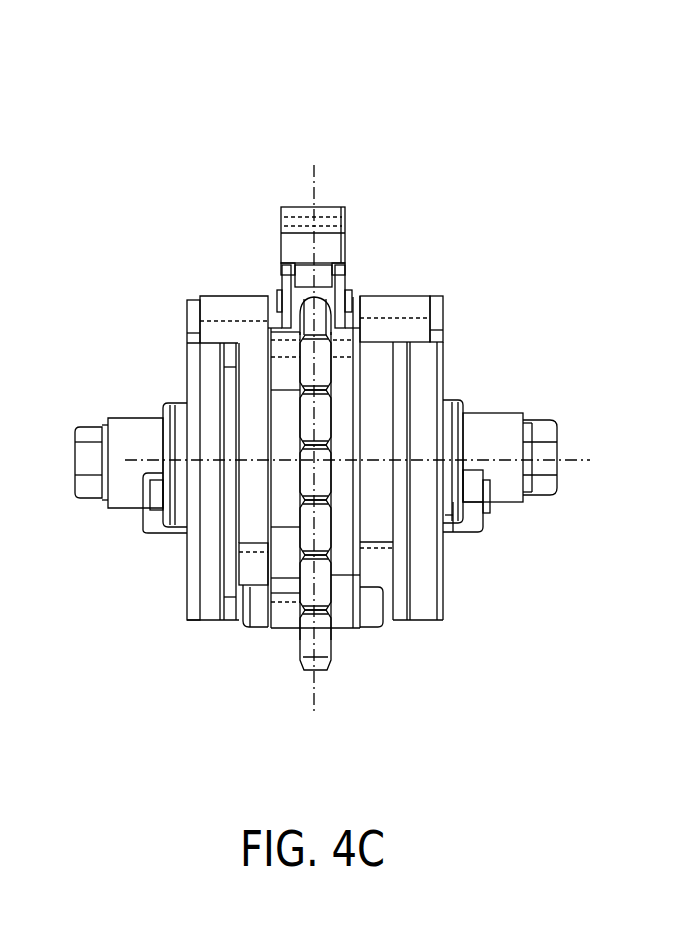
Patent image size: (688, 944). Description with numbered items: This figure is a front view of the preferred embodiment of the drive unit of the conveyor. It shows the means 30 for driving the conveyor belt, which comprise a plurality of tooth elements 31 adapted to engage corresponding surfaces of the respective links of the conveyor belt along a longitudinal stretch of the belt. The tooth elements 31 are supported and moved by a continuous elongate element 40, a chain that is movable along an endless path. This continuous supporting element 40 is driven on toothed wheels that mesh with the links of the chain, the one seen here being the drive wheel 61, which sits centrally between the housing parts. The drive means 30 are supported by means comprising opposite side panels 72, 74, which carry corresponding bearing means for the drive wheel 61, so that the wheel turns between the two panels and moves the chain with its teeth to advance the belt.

The means for driving the conveyor belt 30 is at (372, 158).
The tooth elements 31 is at (372, 219).
The continuous elongate element 40 is at (283, 268).
The drive wheel 61 is at (320, 367).
The side panel 72 is at (443, 372).
The side panel 74 is at (186, 370).